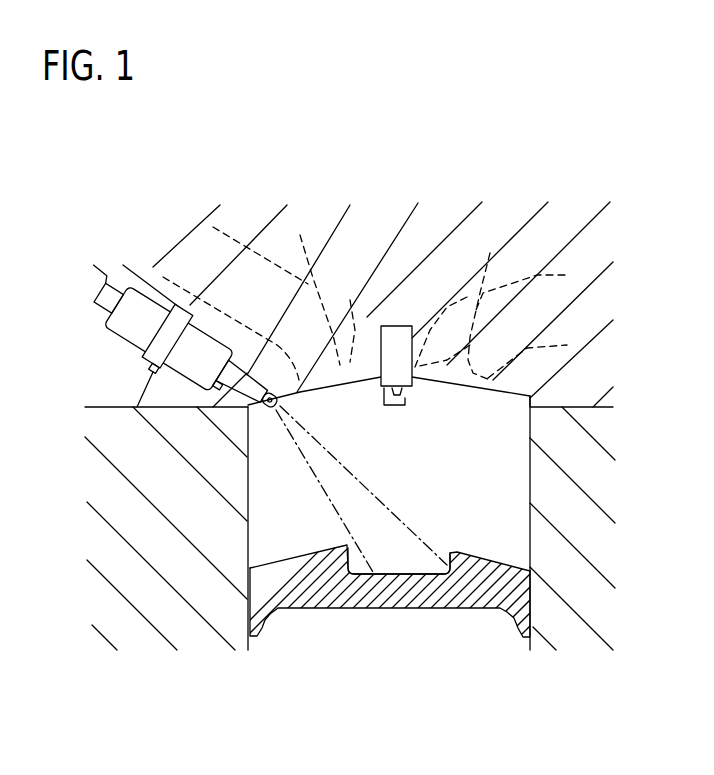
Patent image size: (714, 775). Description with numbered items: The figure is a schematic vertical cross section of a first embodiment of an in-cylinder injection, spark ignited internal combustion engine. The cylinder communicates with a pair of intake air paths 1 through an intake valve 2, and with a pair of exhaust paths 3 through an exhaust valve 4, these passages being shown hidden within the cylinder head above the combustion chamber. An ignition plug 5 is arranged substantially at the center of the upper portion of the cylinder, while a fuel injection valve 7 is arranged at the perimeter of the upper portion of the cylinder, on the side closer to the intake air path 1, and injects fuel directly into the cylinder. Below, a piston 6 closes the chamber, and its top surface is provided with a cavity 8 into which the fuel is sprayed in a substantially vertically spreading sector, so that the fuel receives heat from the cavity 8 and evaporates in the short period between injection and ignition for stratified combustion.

The intake air path 1 is at (233, 236).
The intake valve 2 is at (333, 262).
The exhaust path 3 is at (537, 275).
The exhaust valve 4 is at (472, 268).
The ignition plug 5 is at (397, 337).
The piston 6 is at (338, 600).
The fuel injection valve 7 is at (130, 330).
The cavity 8 is at (410, 565).